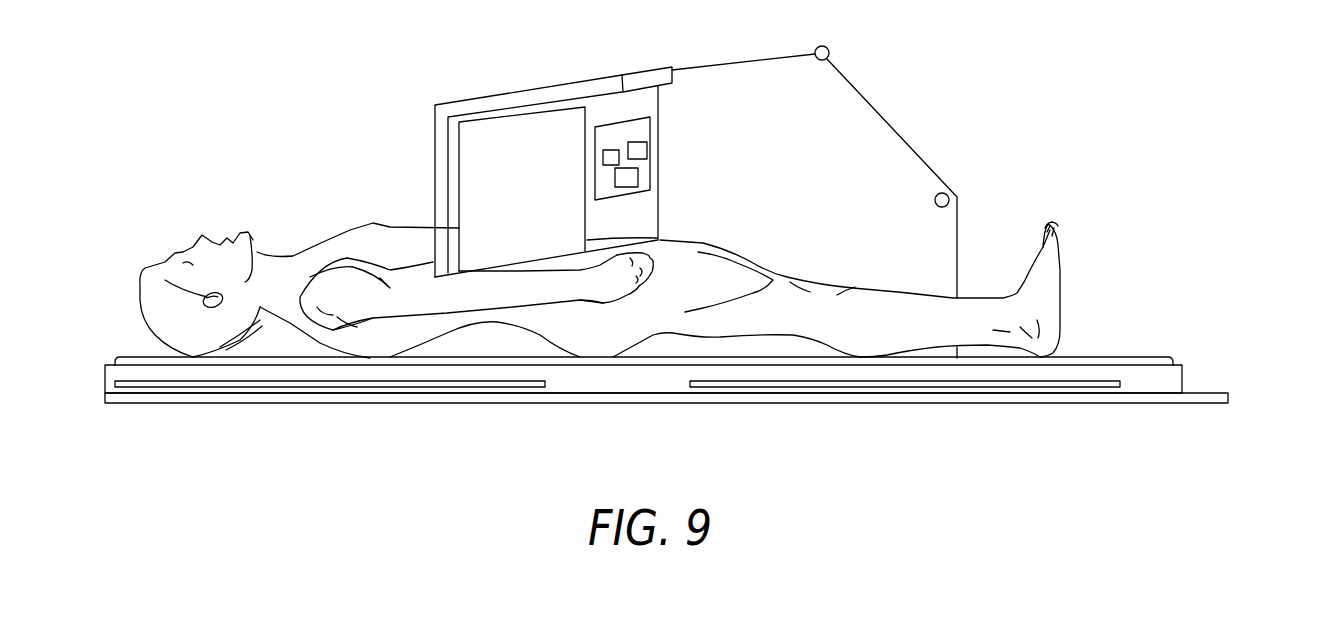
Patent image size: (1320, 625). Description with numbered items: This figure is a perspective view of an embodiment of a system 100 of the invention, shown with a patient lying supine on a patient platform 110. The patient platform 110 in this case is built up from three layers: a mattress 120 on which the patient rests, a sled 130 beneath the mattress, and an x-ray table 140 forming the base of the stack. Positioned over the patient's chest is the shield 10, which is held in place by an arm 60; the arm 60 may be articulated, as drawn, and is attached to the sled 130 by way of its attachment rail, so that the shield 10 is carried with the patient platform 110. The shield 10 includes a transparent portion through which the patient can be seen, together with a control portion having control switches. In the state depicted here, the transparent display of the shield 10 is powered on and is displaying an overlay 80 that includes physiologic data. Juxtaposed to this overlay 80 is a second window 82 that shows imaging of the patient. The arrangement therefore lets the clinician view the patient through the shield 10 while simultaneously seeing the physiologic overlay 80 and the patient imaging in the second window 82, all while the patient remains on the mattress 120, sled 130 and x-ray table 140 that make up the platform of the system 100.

The shield 10 is at (530, 147).
The arm 60 is at (857, 100).
The overlay 80 is at (650, 164).
The second window 82 is at (588, 108).
The system 100 is at (1032, 105).
The patient platform 110 is at (686, 354).
The mattress 120 is at (1122, 357).
The sled 130 is at (1182, 373).
The x-ray table 140 is at (1017, 405).